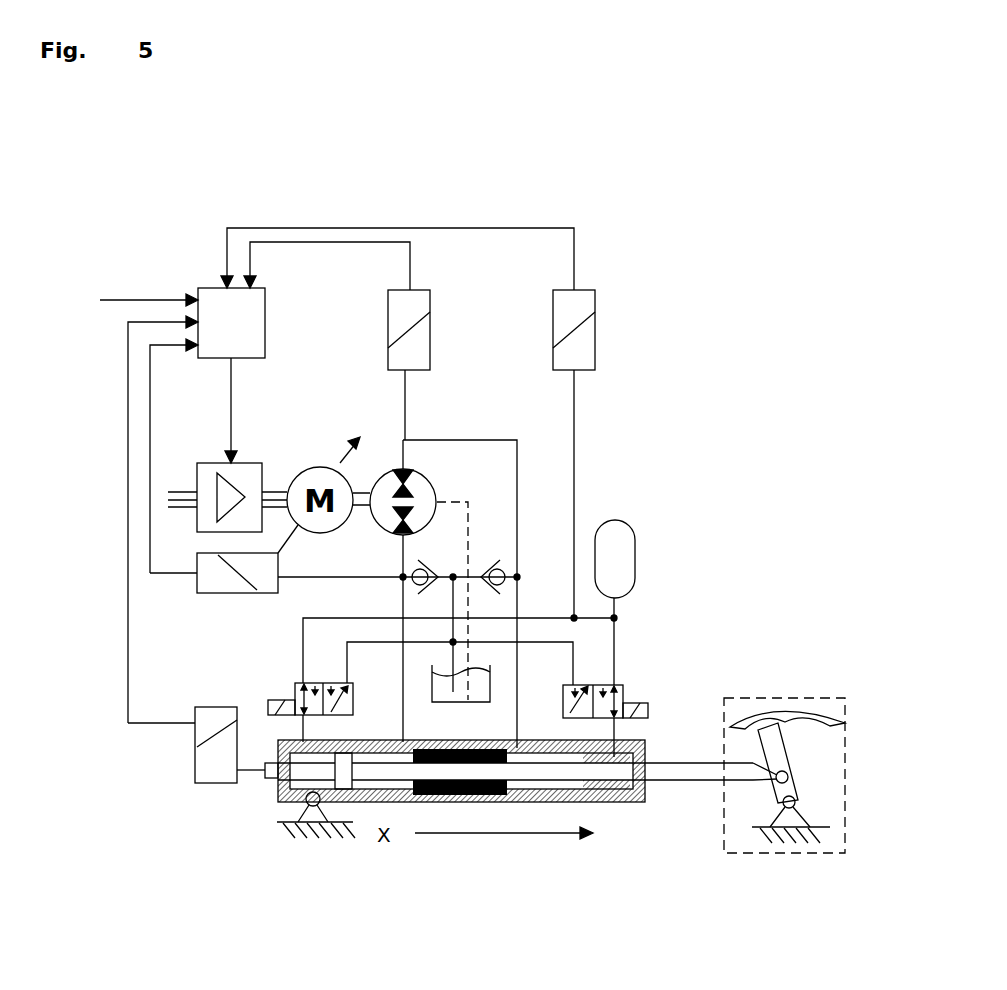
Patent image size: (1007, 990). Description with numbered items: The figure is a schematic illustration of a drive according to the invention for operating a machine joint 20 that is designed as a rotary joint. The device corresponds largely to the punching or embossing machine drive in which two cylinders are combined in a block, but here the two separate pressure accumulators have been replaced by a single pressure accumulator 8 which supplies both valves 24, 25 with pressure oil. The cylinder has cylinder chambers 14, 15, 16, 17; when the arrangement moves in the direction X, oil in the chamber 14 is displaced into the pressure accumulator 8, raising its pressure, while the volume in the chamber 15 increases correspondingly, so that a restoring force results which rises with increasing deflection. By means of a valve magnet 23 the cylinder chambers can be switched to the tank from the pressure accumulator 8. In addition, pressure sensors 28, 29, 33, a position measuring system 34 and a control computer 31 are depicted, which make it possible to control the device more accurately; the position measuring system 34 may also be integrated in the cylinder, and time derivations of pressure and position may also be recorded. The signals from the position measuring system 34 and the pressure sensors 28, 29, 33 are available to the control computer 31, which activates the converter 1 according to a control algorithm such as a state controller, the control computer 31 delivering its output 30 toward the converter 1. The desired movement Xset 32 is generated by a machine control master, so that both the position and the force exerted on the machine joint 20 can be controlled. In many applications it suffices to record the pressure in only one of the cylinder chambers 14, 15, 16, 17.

The converter 1 is at (195, 507).
The pressure accumulator 8 is at (614, 553).
The cylinder chamber 14 is at (620, 800).
The cylinder chamber 15 is at (305, 783).
The cylinder chamber 16 is at (523, 787).
The cylinder chamber 17 is at (383, 787).
The machine joint 20 is at (743, 697).
The valve magnet 23 is at (648, 700).
The valve 24 is at (295, 683).
The valve 25 is at (593, 683).
The pressure sensor 28 is at (588, 290).
The pressure sensor 29 is at (423, 290).
The speed setpoint output 30 is at (232, 398).
The control computer 31 is at (265, 288).
The desired movement Xset 32 is at (157, 297).
The pressure sensor 33 is at (195, 587).
The position measuring system 34 is at (195, 747).